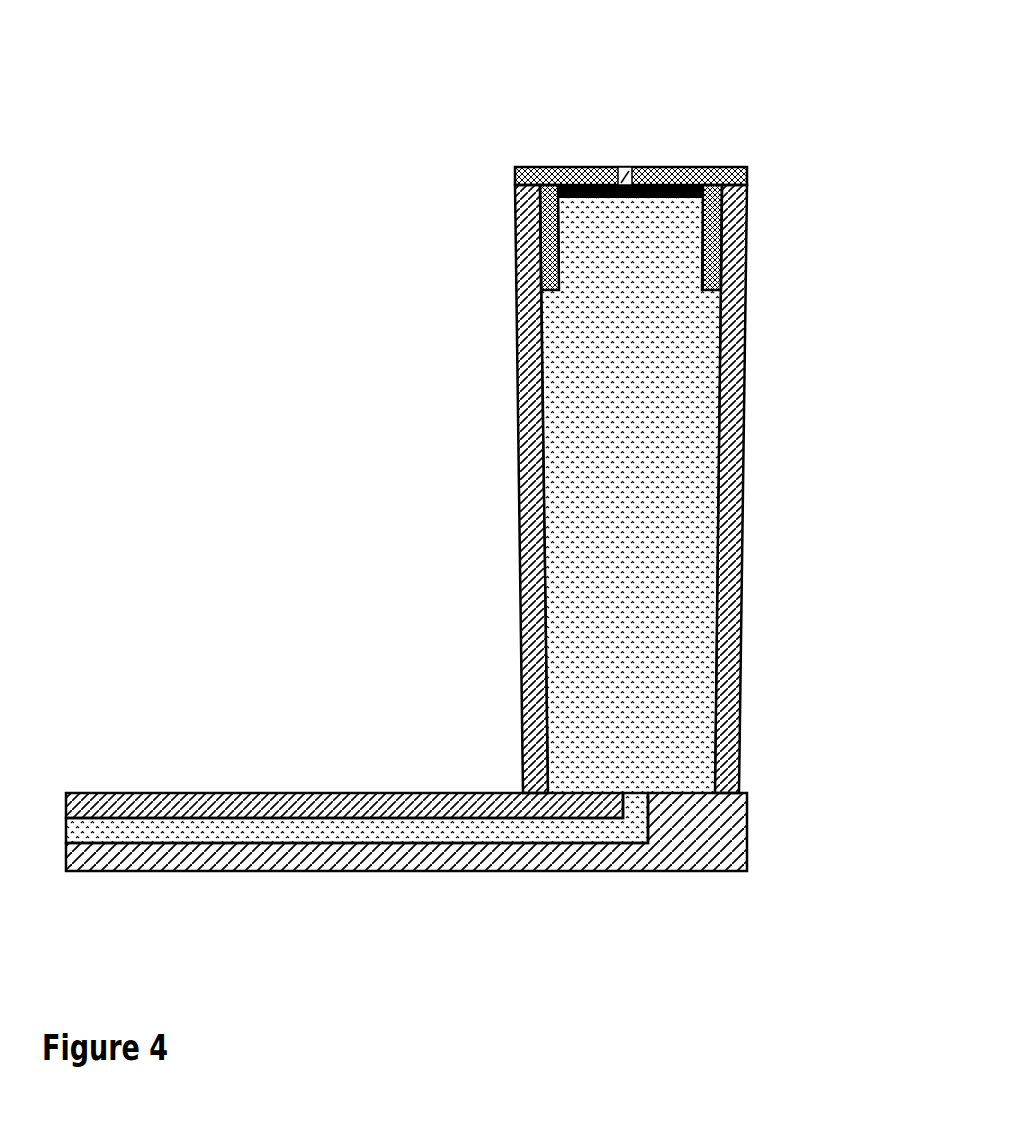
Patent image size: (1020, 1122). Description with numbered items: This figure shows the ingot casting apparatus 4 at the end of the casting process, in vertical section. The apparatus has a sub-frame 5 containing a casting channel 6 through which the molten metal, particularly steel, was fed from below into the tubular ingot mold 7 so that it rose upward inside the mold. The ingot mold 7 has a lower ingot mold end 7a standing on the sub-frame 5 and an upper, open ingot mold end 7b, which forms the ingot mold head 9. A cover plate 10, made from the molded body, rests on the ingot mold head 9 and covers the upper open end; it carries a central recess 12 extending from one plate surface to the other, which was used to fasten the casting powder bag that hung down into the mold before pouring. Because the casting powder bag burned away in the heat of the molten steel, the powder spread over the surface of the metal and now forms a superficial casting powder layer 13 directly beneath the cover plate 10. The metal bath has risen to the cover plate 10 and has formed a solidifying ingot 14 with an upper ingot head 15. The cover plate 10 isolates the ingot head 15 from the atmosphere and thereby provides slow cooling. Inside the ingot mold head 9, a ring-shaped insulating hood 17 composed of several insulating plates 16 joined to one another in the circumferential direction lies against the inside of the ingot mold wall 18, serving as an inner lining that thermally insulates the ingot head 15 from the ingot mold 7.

The ingot casting apparatus 4 is at (128, 87).
The sub-frame 5 is at (153, 864).
The casting channel 6 is at (370, 838).
The ingot mold 7 is at (521, 365).
The lower ingot mold end 7a is at (485, 776).
The upper ingot mold end 7b is at (492, 155).
The ingot mold head 9 is at (516, 222).
The cover plate 10 is at (676, 166).
The central recess 12 is at (628, 165).
The casting powder layer 13 is at (700, 164).
The ingot 14 is at (628, 425).
The ingot head 15 is at (632, 258).
The insulating plate 16 is at (516, 263).
The insulating hood 17 is at (748, 190).
The ingot mold wall 18 is at (522, 590).